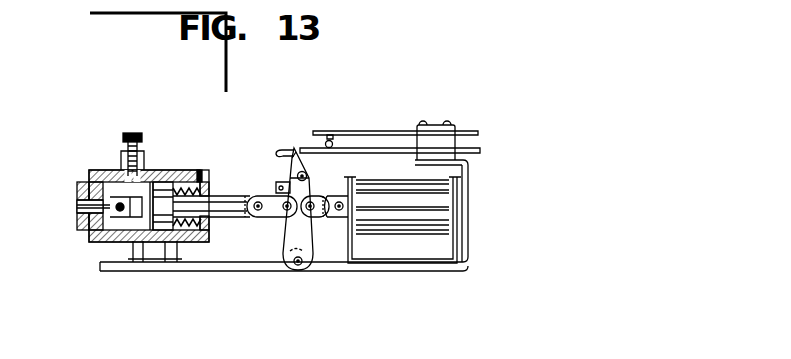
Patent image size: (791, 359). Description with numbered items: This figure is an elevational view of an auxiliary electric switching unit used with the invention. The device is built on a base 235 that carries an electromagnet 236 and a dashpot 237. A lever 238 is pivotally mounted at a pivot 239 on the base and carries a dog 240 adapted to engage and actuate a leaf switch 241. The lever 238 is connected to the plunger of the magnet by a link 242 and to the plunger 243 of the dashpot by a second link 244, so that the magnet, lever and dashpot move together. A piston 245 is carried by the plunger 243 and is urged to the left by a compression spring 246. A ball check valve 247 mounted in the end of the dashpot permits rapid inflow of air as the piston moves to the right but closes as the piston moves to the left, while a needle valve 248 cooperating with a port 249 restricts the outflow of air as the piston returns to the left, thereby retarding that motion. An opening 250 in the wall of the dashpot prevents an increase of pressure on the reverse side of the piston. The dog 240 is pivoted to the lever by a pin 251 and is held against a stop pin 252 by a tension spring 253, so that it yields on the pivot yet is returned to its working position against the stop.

The base 235 is at (372, 268).
The electromagnet 236 is at (426, 223).
The dashpot 237 is at (130, 241).
The lever 238 is at (285, 250).
The pivot 239 is at (298, 267).
The dog 240 is at (295, 148).
The leaf switch 241 is at (370, 142).
The link 242 is at (322, 218).
The plunger 243 is at (233, 220).
The link 244 is at (290, 236).
The piston 245 is at (150, 186).
The compression spring 246 is at (182, 241).
The ball check valve 247 is at (78, 218).
The needle valve 248 is at (131, 133).
The port 249 is at (117, 170).
The opening 250 is at (208, 172).
The pin 251 is at (306, 174).
The stop pin 252 is at (280, 175).
The tension spring 253 is at (277, 180).